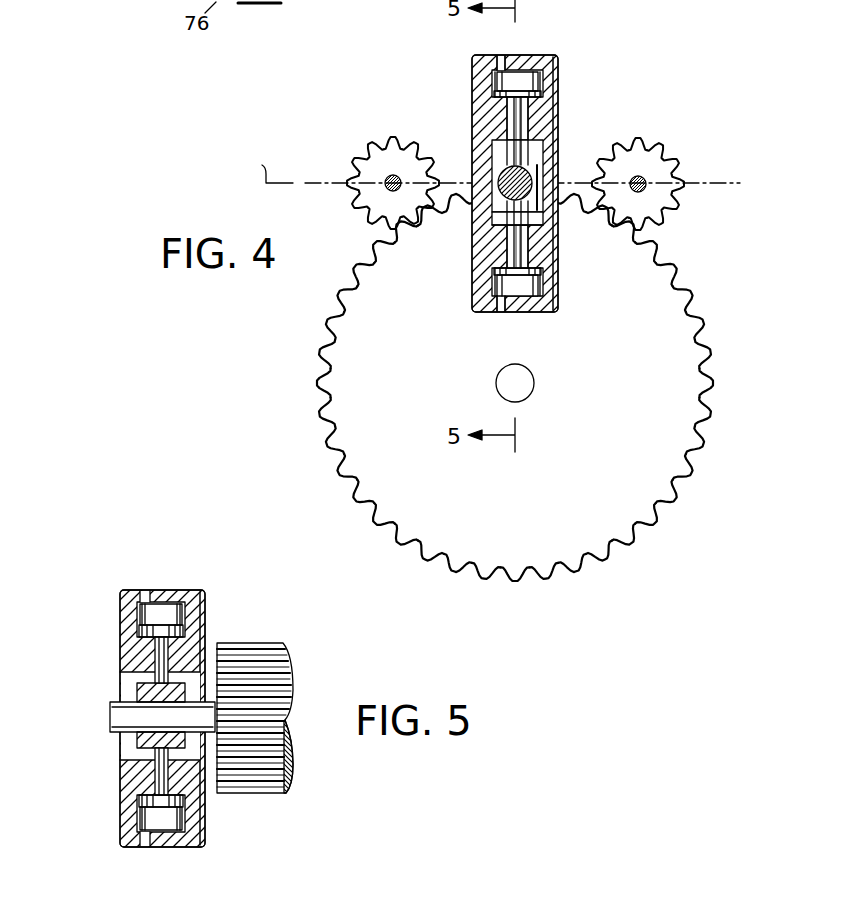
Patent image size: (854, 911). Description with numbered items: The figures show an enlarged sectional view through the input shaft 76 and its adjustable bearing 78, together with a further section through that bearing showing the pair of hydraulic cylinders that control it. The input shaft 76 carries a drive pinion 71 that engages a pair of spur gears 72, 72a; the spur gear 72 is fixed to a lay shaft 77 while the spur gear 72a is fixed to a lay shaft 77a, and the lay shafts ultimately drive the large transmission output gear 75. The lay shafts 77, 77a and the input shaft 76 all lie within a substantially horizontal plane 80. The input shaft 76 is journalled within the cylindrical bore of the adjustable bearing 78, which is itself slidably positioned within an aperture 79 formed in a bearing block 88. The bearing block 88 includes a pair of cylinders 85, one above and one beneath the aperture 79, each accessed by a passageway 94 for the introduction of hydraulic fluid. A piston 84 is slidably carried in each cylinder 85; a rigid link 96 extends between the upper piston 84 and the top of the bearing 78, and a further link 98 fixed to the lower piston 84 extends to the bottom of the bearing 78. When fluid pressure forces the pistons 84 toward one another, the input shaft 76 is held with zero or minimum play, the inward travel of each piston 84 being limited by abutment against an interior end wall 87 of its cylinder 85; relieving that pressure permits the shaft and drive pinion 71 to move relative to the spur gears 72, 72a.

In FIG. 4, the drive pinion 71 is at (492, 224).
In FIG. 5, the drive pinion 71 is at (290, 643).
In FIG. 4, the spur gear 72 is at (360, 183).
In FIG. 4, the spur gear 72a is at (660, 203).
In FIG. 4, the transmission output gear 75 is at (673, 320).
In FIG. 4, the input shaft 76 is at (503, 172).
In FIG. 5, the input shaft 76 is at (120, 717).
In FIG. 4, the lay shaft 77 is at (392, 180).
In FIG. 4, the lay shaft 77a is at (642, 182).
In FIG. 4, the adjustable bearing 78 is at (497, 207).
In FIG. 5, the adjustable bearing 78 is at (137, 688).
In FIG. 4, the aperture 79 is at (535, 150).
In FIG. 5, the aperture 79 is at (123, 693).
In FIG. 4, the horizontal plane 80 is at (264, 166).
In FIG. 4, the piston 84 is at (541, 99).
In FIG. 5, the piston 84 is at (190, 631).
In FIG. 4, the cylinder 85 is at (530, 70).
In FIG. 5, the cylinder 85 is at (170, 612).
In FIG. 4, the interior end wall 87 is at (492, 82).
In FIG. 5, the interior end wall 87 is at (140, 628).
In FIG. 4, the bearing block 88 is at (558, 57).
In FIG. 5, the bearing block 88 is at (184, 590).
In FIG. 4, the passageway 94 is at (502, 58).
In FIG. 5, the passageway 94 is at (147, 590).
In FIG. 4, the rigid link 96 is at (510, 121).
In FIG. 5, the rigid link 96 is at (157, 662).
In FIG. 4, the link 98 is at (512, 247).
In FIG. 5, the link 98 is at (160, 751).